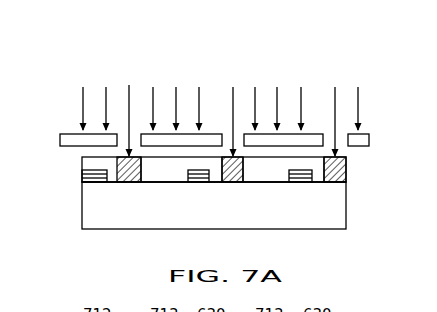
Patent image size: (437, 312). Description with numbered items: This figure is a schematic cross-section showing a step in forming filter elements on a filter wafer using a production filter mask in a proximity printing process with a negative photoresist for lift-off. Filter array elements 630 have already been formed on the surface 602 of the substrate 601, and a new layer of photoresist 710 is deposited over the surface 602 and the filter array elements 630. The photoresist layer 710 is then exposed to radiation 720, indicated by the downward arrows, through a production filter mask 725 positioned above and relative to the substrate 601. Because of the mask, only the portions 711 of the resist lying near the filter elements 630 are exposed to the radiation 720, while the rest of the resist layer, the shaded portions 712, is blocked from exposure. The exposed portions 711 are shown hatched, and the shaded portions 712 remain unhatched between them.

The substrate 601 is at (226, 221).
The surface 602 is at (132, 182).
The filter array elements 630 is at (82, 176).
The photoresist layer 710 is at (347, 170).
The exposed portions of resist 711 is at (128, 156).
The shaded portions of resist 712 is at (163, 170).
The radiation 720 is at (337, 101).
The production filter mask 725 is at (363, 137).